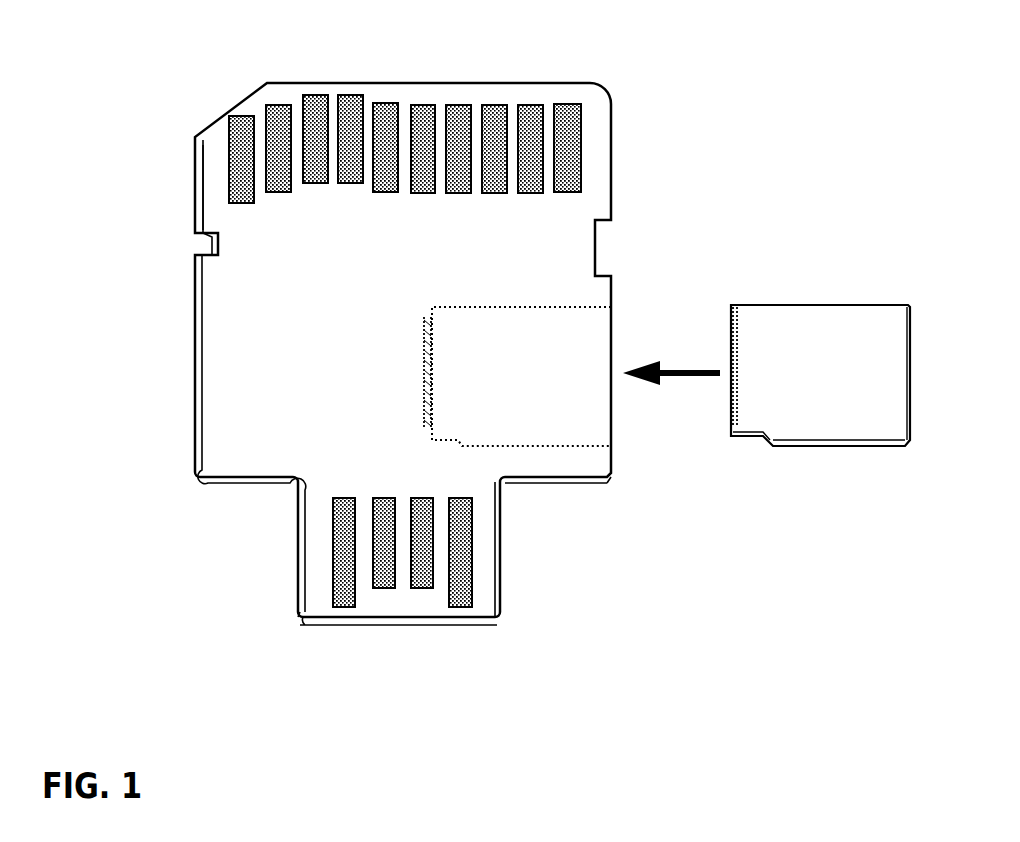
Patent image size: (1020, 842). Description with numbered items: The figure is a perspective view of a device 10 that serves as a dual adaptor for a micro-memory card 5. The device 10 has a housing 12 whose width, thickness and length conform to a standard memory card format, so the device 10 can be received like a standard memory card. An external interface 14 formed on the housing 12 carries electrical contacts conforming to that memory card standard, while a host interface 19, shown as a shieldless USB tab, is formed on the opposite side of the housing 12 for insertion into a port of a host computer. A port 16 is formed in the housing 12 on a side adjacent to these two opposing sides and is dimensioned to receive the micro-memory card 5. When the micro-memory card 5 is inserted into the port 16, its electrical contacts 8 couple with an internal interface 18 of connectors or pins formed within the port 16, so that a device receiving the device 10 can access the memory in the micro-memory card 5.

The micro-memory card 5 is at (808, 430).
The electrical contacts 8 is at (727, 412).
The device 10 is at (658, 161).
The housing 12 is at (195, 290).
The external interface 14 is at (426, 99).
The port 16 is at (577, 328).
The internal interface 18 is at (414, 355).
The host interface 19 is at (399, 611).